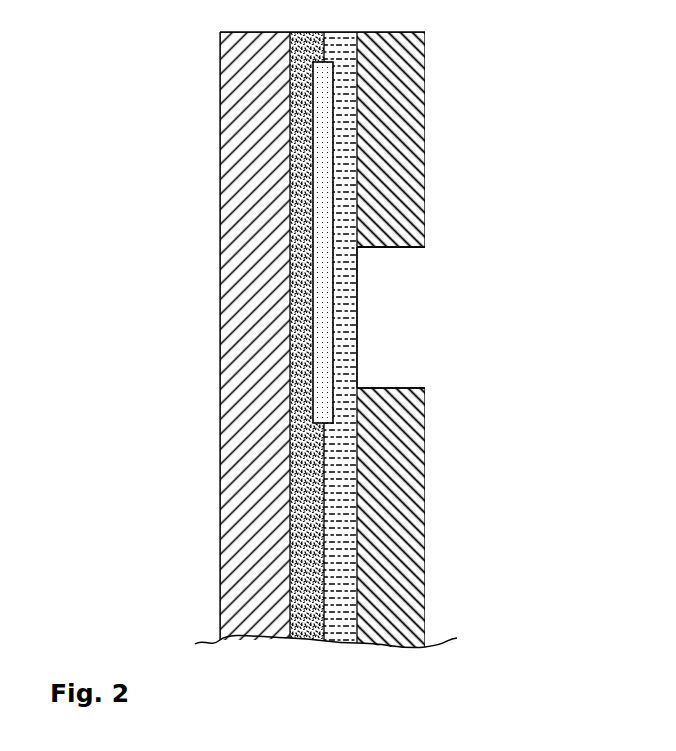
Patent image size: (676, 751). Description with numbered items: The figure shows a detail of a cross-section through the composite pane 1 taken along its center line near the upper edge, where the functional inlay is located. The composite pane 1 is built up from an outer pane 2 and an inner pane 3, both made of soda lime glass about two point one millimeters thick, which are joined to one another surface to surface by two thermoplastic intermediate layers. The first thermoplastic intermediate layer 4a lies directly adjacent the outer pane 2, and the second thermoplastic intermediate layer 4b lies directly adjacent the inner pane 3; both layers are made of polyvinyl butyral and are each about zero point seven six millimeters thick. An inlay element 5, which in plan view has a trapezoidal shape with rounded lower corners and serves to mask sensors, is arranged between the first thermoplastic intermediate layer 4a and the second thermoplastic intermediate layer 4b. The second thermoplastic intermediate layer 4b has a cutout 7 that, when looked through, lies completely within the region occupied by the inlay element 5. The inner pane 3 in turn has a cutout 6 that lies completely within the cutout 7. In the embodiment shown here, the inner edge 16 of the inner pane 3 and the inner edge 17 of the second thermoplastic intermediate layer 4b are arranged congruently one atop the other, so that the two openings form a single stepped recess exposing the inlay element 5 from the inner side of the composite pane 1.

The composite pane 1 is at (183, 132).
The outer pane 2 is at (238, 315).
The inner pane 3 is at (403, 73).
The first thermoplastic intermediate layer 4a is at (300, 535).
The second thermoplastic intermediate layer 4b is at (343, 102).
The inlay element 5 is at (323, 192).
The cutout 6 is at (405, 278).
The cutout 7 is at (345, 333).
The inner edge 16 is at (408, 247).
The inner edge 17 is at (346, 249).